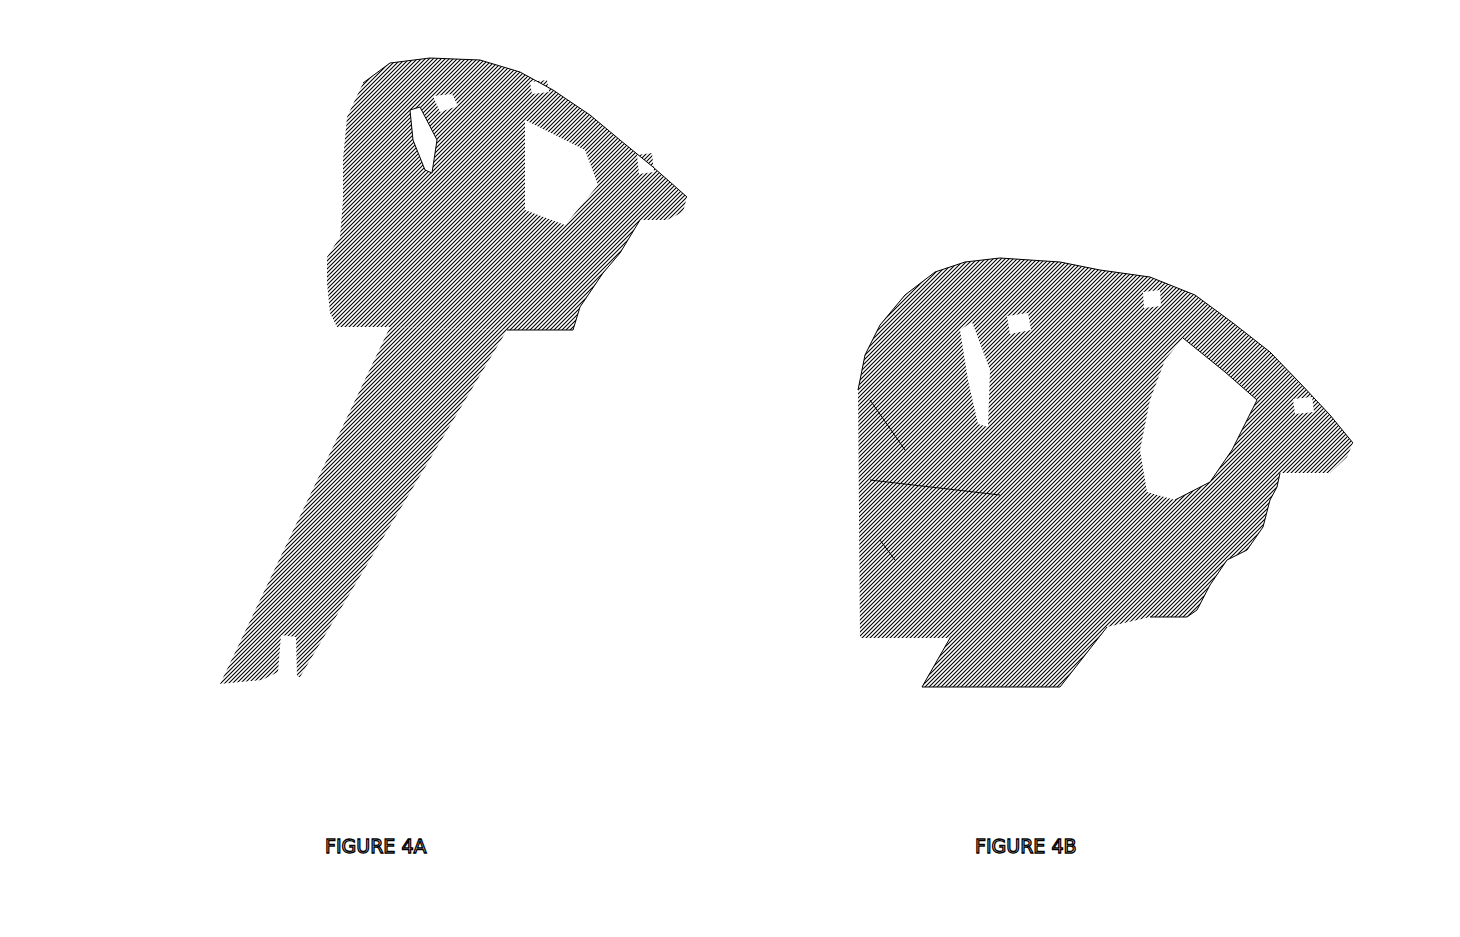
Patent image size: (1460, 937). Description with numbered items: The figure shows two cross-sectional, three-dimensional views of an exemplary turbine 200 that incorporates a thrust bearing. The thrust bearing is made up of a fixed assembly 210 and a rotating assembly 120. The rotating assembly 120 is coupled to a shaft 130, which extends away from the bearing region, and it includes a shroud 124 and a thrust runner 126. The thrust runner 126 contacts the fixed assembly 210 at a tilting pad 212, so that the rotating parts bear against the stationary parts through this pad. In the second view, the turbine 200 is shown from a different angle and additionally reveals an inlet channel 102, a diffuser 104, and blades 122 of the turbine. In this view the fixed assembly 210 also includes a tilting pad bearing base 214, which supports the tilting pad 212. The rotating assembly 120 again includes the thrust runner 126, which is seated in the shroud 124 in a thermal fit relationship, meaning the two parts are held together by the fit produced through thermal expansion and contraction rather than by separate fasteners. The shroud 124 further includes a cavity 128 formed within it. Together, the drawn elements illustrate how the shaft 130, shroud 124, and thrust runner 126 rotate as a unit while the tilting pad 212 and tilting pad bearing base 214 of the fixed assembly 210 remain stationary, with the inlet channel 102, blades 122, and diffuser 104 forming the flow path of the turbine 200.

In FIG. 4B, the inlet channel 102 is at (857, 620).
In FIG. 4B, the diffuser 104 is at (1176, 416).
In FIG. 4A, the rotating assembly 120 is at (308, 223).
In FIG. 4B, the rotating assembly 120 is at (1127, 663).
In FIG. 4B, the blades 122 is at (1177, 613).
In FIG. 4A, the shroud 124 is at (583, 290).
In FIG. 4B, the shroud 124 is at (1230, 560).
In FIG. 4A, the thrust runner 126 is at (593, 257).
In FIG. 4B, the thrust runner 126 is at (875, 492).
In FIG. 4B, the cavity 128 is at (883, 548).
In FIG. 4A, the shaft 130 is at (367, 450).
In FIG. 4A, the turbine 200 is at (523, 443).
In FIG. 4A, the fixed assembly 210 is at (718, 188).
In FIG. 4B, the fixed assembly 210 is at (1213, 228).
In FIG. 4A, the tilting pad 212 is at (403, 220).
In FIG. 4B, the tilting pad 212 is at (1267, 500).
In FIG. 4B, the tilting pad bearing base 214 is at (900, 447).